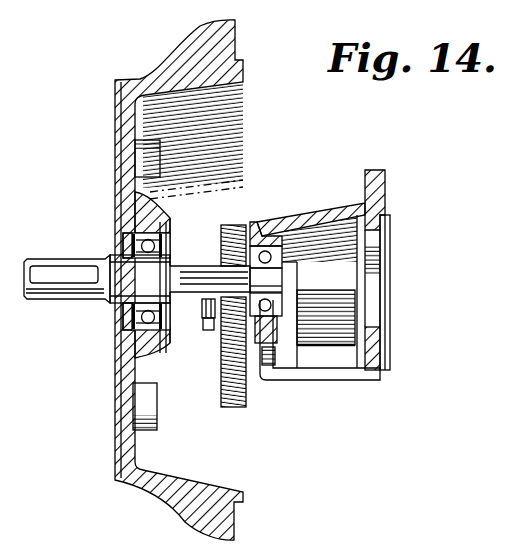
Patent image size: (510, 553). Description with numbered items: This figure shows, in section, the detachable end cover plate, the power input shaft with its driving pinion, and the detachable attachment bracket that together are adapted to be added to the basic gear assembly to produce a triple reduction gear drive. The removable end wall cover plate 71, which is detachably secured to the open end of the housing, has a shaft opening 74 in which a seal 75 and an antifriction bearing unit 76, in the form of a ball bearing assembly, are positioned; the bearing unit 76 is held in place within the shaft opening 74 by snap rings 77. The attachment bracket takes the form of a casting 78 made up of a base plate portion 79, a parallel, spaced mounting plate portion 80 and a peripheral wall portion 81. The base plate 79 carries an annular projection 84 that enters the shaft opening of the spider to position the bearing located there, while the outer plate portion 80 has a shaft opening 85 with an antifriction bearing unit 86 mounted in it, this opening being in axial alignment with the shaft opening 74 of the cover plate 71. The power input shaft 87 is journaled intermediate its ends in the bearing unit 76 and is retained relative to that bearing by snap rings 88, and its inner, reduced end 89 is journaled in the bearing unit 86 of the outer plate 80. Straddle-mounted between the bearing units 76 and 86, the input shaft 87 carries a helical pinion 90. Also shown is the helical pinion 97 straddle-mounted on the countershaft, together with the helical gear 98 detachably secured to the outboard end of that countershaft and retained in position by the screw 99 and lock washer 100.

The end wall cover plate 71 is at (150, 73).
The shaft opening 74 is at (130, 236).
The seal 75 is at (117, 312).
The antifriction bearing unit 76 is at (163, 218).
The snap rings 77 is at (152, 350).
The attachment bracket 78 is at (315, 214).
The base plate portion 79 is at (378, 376).
The mounting plate portion 80 is at (265, 370).
The peripheral wall portion 81 is at (339, 213).
The annular projection 84 is at (388, 360).
The shaft opening 85 is at (257, 246).
The antifriction bearing unit 86 is at (278, 240).
The power input shaft 87 is at (68, 259).
The snap rings 88 is at (140, 287).
The reduced end 89 is at (283, 279).
The helical pinion 90 is at (193, 267).
The helical pinion 97 is at (337, 345).
The helical gear 98 is at (232, 226).
The screw 99 is at (207, 327).
The lock washer 100 is at (203, 300).